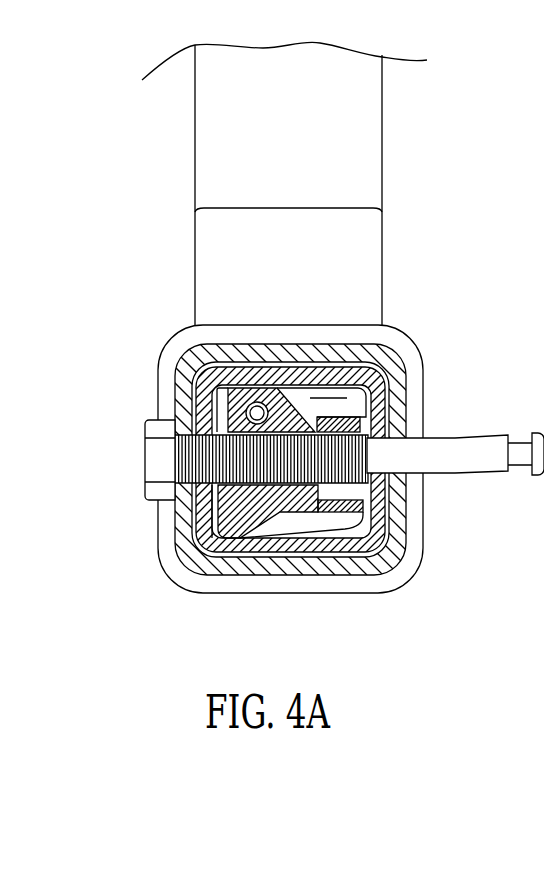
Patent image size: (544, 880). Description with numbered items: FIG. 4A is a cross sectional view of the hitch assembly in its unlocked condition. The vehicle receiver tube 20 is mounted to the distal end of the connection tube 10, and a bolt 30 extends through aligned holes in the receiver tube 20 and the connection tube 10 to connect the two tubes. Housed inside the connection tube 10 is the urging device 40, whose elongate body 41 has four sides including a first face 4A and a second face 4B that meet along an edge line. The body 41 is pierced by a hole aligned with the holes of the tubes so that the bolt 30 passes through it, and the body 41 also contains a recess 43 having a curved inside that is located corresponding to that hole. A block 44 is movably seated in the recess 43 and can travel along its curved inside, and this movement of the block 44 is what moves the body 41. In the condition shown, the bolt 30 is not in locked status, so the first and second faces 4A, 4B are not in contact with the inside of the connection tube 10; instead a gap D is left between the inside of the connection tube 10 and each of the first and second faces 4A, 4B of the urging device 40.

The connection tube 10 is at (222, 393).
The vehicle receiver tube 20 is at (393, 348).
The bolt 30 is at (158, 461).
The urging device 40 is at (205, 362).
The body 41 is at (392, 395).
The recess 43 is at (335, 400).
The block 44 is at (370, 425).
The first face 4A is at (220, 488).
The second face 4B is at (277, 390).
The gap D is at (190, 412).